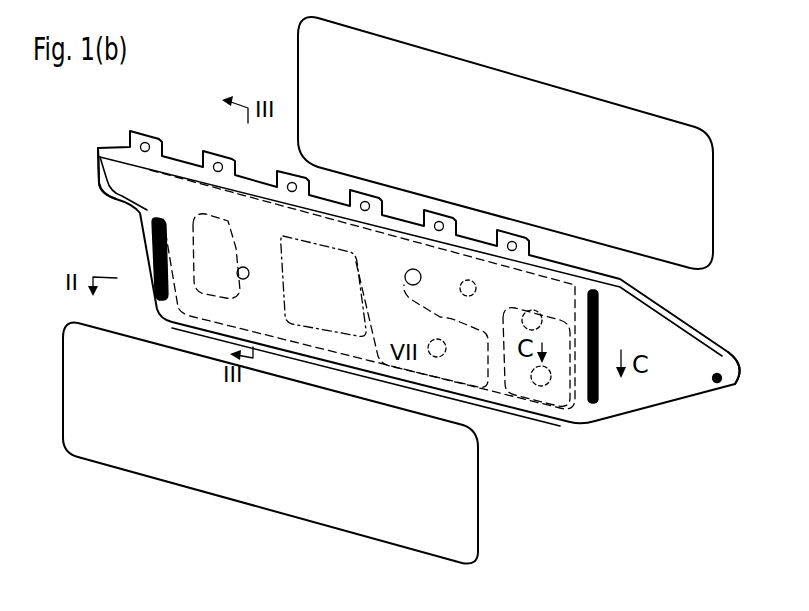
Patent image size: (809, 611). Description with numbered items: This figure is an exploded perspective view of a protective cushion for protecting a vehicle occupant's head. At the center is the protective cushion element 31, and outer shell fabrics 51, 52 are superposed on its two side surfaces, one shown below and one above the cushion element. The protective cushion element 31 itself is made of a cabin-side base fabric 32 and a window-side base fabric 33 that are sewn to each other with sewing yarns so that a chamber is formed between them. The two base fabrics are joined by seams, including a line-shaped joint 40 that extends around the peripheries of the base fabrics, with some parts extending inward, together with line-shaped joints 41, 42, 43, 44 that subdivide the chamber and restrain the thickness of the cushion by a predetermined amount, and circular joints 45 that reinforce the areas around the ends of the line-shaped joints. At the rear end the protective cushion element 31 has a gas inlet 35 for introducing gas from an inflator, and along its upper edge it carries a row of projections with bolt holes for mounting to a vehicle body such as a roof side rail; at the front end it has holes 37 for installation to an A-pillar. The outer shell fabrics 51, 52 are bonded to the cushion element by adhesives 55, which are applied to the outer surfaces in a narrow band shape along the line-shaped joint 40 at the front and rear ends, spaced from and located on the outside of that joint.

The protective cushion element 31 is at (667, 410).
The cabin-side base fabric 32 is at (693, 380).
The window-side base fabric 33 is at (727, 349).
The gas inlet 35 is at (97, 168).
The holes 37 is at (732, 390).
The line-shaped joint 40 is at (177, 157).
The line-shaped joint 41 is at (216, 256).
The line-shaped joint 42 is at (413, 285).
The line-shaped joint 43 is at (468, 320).
The line-shaped joint 44 is at (470, 300).
The circular joints 45 is at (257, 283).
The outer shell fabric 51 is at (333, 525).
The outer shell fabric 52 is at (660, 149).
The adhesives 55 is at (140, 235).